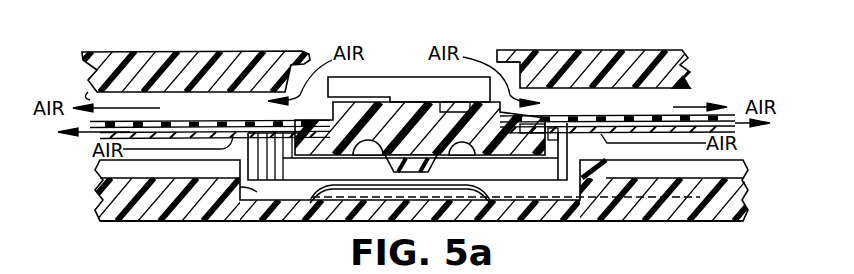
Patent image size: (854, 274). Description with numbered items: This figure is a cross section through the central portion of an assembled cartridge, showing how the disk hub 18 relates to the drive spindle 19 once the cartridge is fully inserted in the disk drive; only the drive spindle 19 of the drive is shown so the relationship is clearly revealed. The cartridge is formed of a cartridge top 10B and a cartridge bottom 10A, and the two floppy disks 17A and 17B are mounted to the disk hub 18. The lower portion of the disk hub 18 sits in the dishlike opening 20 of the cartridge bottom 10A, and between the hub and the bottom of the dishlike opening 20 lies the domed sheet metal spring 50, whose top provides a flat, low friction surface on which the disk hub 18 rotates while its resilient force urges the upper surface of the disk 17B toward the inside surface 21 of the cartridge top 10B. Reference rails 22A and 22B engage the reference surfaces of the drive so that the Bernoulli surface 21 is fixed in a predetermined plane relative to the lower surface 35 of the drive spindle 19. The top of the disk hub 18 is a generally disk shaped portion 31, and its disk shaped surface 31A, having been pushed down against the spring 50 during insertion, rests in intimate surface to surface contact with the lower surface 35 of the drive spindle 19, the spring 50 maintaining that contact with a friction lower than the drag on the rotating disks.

The cartridge bottom 10A is at (718, 208).
The cartridge top 10B is at (683, 62).
The floppy disk 17A is at (640, 135).
The floppy disk 17B is at (230, 122).
The disk hub 18 is at (330, 158).
The drive spindle 19 is at (390, 83).
The dishlike opening 20 is at (233, 221).
The inside surface 21 is at (88, 100).
The reference rail 22A is at (298, 50).
The reference rail 22B is at (500, 57).
The disk shaped portion 31 is at (335, 118).
The disk shaped surface 31A is at (455, 112).
The lower surface of drive spindle 35 is at (541, 106).
The spring 50 is at (315, 196).